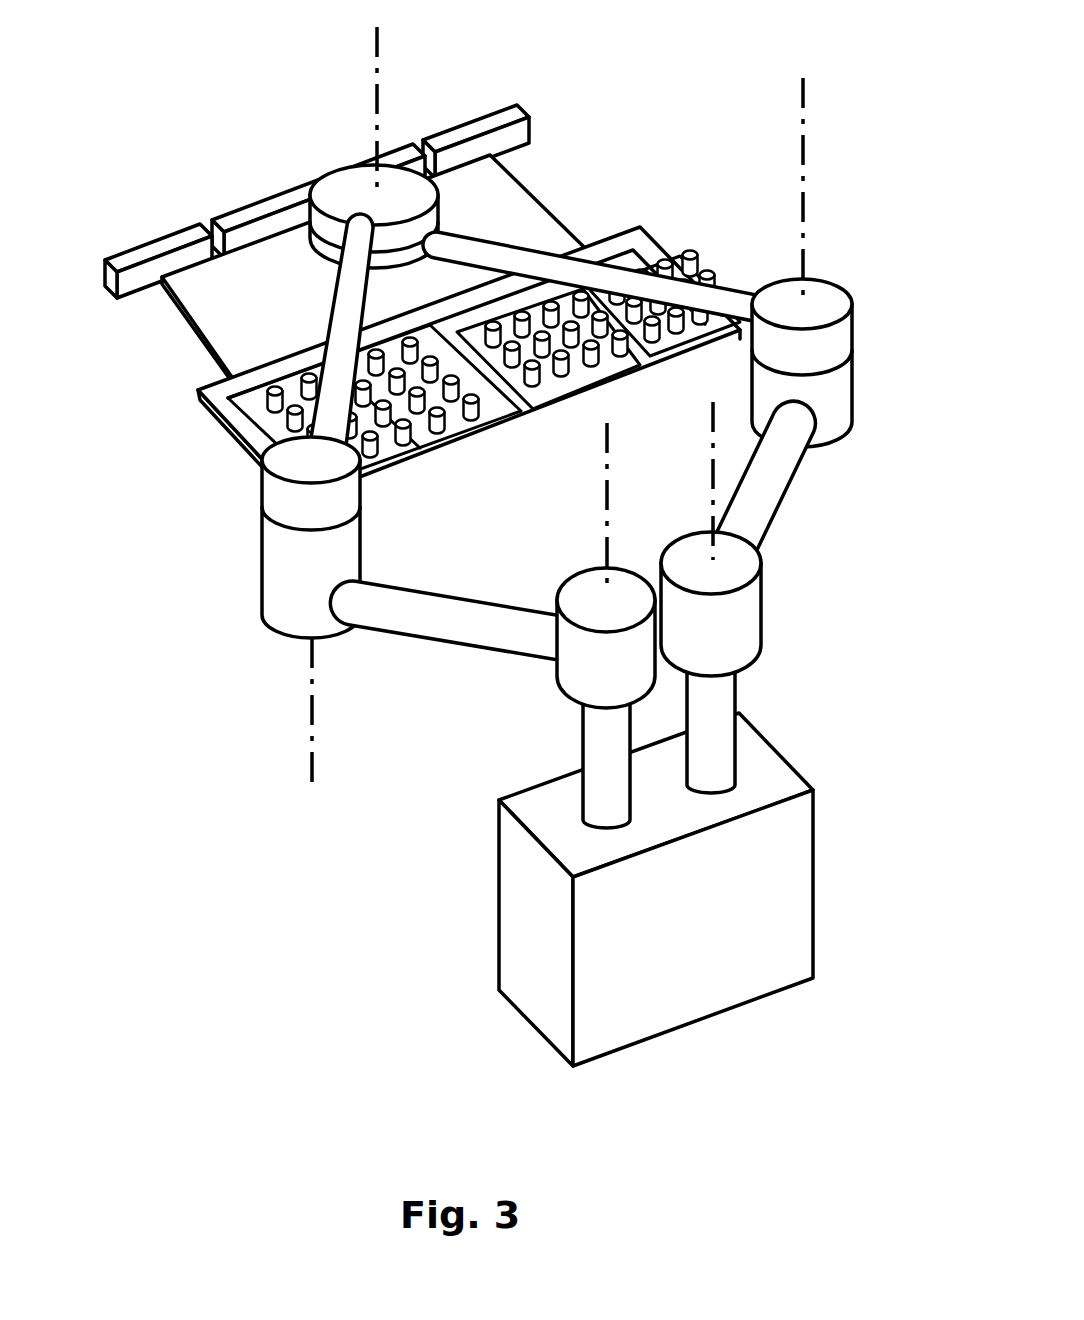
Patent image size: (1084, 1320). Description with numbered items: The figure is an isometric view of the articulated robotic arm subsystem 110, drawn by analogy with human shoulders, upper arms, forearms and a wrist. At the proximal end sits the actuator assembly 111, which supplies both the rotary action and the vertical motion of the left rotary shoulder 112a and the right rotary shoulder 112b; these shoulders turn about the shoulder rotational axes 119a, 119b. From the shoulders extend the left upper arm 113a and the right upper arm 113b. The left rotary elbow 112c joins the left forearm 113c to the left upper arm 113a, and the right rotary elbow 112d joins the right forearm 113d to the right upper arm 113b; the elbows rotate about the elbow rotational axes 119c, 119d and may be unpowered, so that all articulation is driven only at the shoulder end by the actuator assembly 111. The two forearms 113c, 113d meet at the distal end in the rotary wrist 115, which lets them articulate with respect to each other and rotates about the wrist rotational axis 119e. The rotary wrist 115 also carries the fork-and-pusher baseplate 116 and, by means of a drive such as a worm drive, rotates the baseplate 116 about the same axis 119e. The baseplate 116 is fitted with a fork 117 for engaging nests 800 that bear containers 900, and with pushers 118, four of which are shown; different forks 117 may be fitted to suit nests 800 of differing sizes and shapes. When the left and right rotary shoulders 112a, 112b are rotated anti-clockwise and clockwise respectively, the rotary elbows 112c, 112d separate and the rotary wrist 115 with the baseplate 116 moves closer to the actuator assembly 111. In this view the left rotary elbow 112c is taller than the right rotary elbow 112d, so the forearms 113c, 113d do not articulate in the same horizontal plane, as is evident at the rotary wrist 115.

The articulated robotic arm subsystem 110 is at (504, 534).
The actuator assembly 111 is at (770, 763).
The left rotary shoulder 112a is at (580, 663).
The right rotary shoulder 112b is at (748, 602).
The left rotary elbow 112c is at (298, 540).
The right rotary elbow 112d is at (827, 295).
The left upper arm 113a is at (402, 613).
The right upper arm 113b is at (773, 475).
The left forearm 113c is at (343, 325).
The right forearm 113d is at (527, 255).
The rotary wrist 115 is at (333, 173).
The fork-and-pusher baseplate 116 is at (245, 313).
The fork 117 is at (247, 453).
The pusher 118 is at (198, 237).
The shoulder rotational axis 119a is at (610, 497).
The shoulder rotational axis 119b is at (710, 500).
The elbow rotational axis 119c is at (305, 687).
The elbow rotational axis 119d is at (808, 140).
The wrist rotational axis 119e is at (383, 80).
The nest 800 is at (455, 440).
The container 900 is at (573, 380).